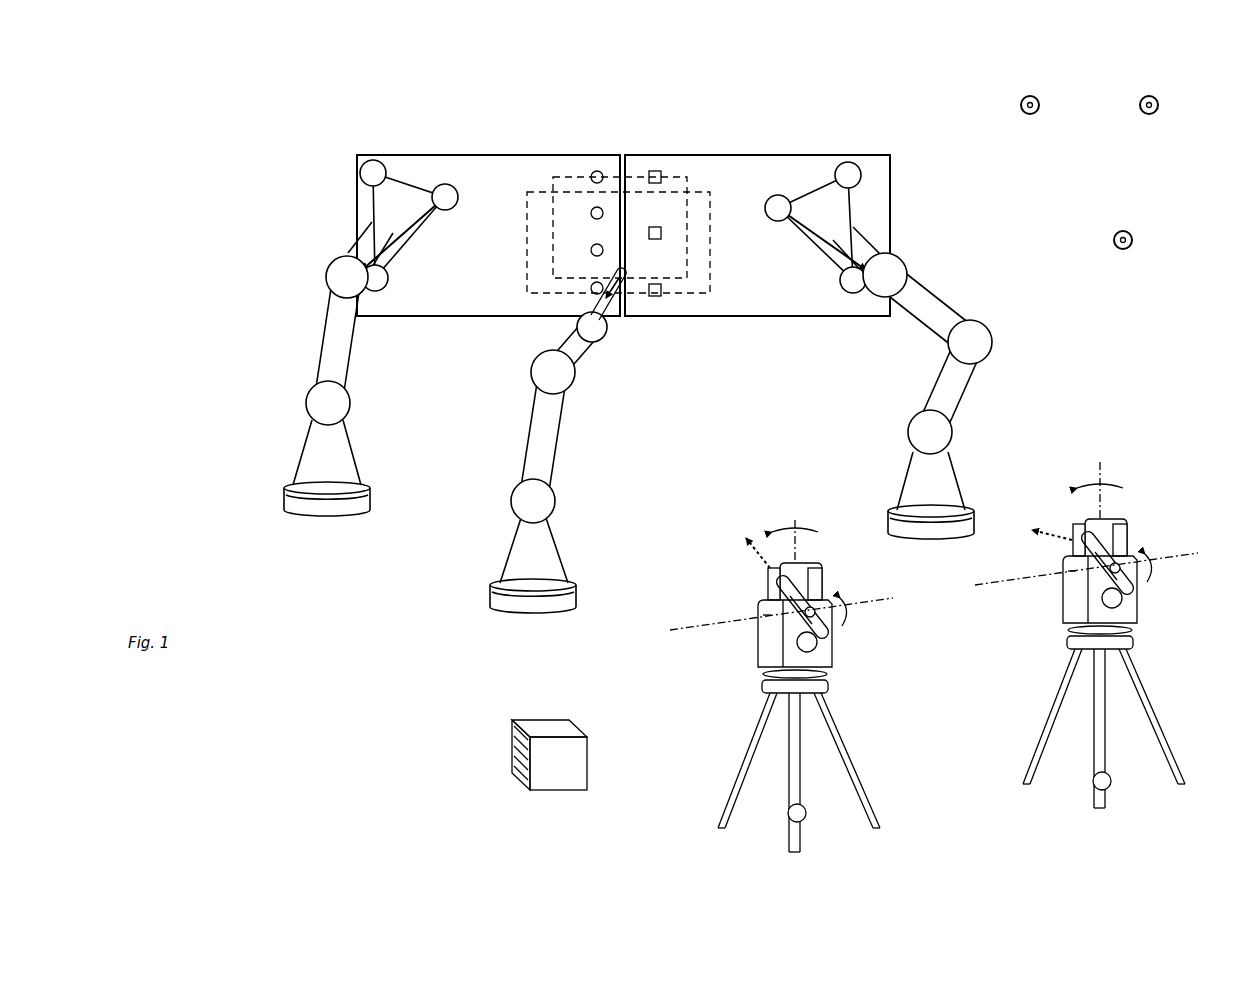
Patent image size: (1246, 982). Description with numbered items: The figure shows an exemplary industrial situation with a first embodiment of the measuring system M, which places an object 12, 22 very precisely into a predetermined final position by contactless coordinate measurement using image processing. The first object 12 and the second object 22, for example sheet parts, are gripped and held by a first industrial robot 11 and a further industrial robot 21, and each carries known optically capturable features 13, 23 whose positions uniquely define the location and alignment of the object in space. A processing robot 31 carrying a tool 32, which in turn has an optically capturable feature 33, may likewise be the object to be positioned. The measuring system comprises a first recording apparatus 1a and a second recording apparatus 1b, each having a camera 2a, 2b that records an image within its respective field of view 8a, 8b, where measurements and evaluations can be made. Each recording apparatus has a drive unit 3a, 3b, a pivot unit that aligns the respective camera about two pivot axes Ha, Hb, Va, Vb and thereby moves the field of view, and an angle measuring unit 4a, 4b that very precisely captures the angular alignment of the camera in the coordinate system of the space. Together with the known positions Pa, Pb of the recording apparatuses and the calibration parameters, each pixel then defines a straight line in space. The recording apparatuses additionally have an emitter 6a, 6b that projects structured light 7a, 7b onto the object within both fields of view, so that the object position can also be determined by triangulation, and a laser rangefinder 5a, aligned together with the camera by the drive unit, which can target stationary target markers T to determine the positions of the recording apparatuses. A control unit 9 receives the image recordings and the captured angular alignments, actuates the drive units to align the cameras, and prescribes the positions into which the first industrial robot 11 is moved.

The first recording apparatus 1a is at (782, 674).
The second recording apparatus 1b is at (1088, 635).
The first camera 2a is at (845, 652).
The second camera 2b is at (1136, 586).
The drive unit 3a is at (756, 699).
The drive unit 3b is at (1060, 656).
The angle measuring unit 4a is at (763, 672).
The angle measuring unit 4b is at (1068, 627).
The laser rangefinder 5a is at (790, 633).
The first emitter 6a is at (823, 635).
The second emitter 6b is at (1064, 525).
The structured light 7a is at (732, 562).
The structured light 7b is at (1028, 545).
The field of view 8a is at (580, 270).
The field of view 8b is at (585, 196).
The control unit 9 is at (549, 755).
The first industrial robot 11 is at (363, 338).
The first object 12 is at (475, 203).
The features 13 is at (565, 170).
The industrial robot 21 is at (903, 350).
The object 22 is at (798, 235).
The features 23 is at (674, 172).
The processing robot 31 is at (537, 462).
The tool 32 is at (631, 304).
The feature 33 is at (635, 330).
The position Pa is at (774, 829).
The position Pb is at (1069, 794).
The pivot axis Va is at (826, 529).
The pivot axis Vb is at (1131, 487).
The pivot axis Ha is at (797, 614).
The pivot axis Hb is at (1100, 569).
The measuring system M is at (425, 712).
The target markers T is at (1157, 166).